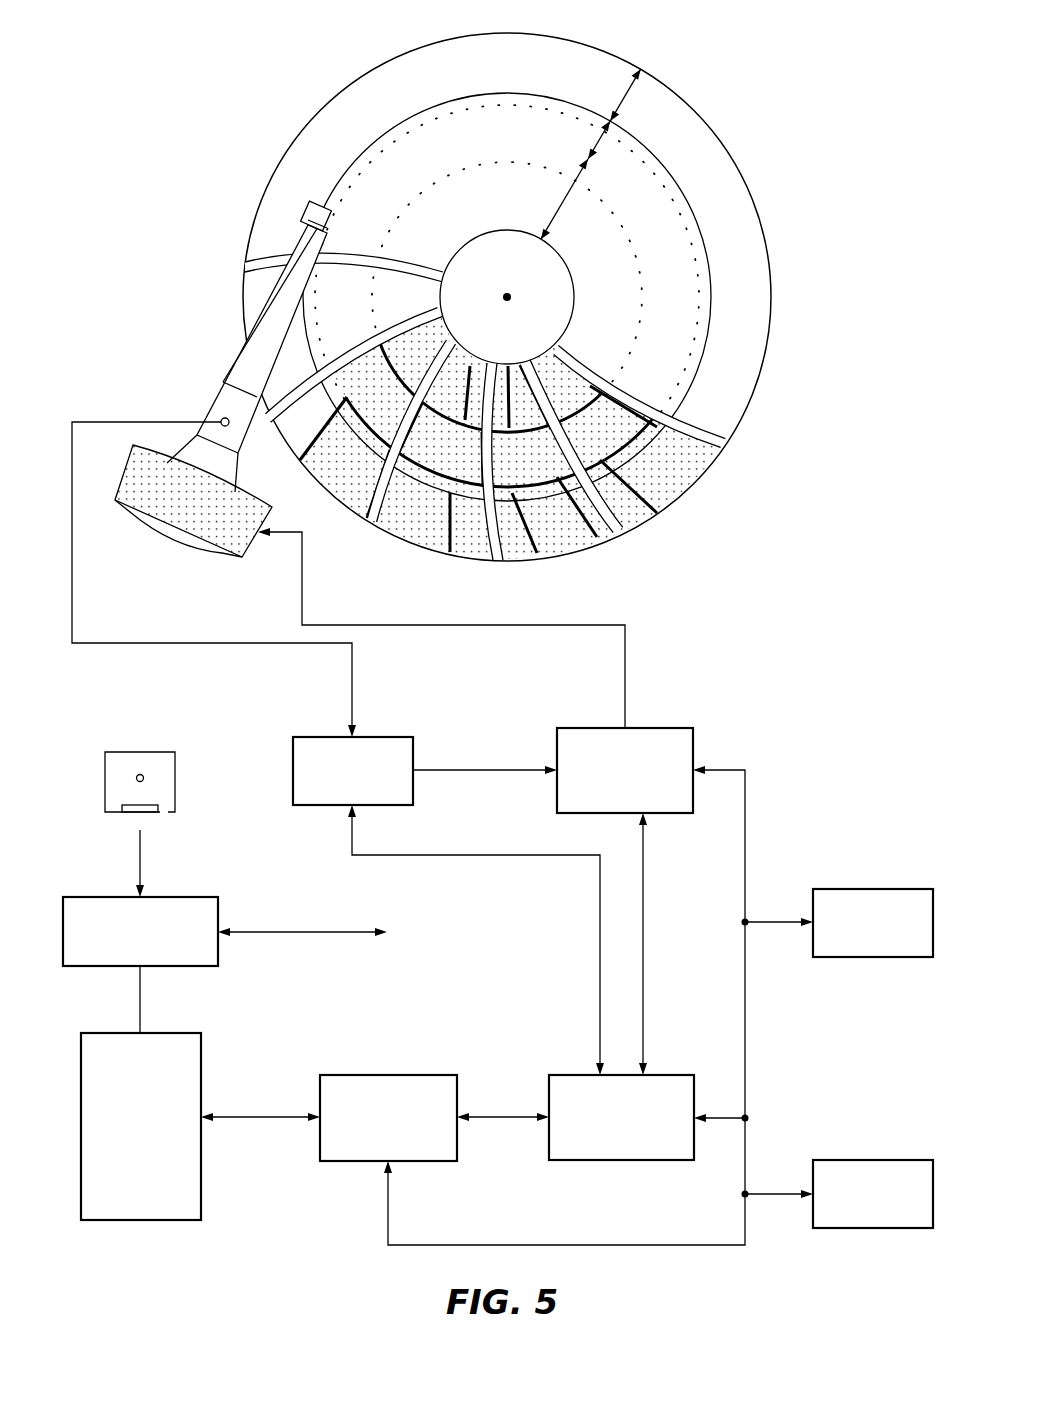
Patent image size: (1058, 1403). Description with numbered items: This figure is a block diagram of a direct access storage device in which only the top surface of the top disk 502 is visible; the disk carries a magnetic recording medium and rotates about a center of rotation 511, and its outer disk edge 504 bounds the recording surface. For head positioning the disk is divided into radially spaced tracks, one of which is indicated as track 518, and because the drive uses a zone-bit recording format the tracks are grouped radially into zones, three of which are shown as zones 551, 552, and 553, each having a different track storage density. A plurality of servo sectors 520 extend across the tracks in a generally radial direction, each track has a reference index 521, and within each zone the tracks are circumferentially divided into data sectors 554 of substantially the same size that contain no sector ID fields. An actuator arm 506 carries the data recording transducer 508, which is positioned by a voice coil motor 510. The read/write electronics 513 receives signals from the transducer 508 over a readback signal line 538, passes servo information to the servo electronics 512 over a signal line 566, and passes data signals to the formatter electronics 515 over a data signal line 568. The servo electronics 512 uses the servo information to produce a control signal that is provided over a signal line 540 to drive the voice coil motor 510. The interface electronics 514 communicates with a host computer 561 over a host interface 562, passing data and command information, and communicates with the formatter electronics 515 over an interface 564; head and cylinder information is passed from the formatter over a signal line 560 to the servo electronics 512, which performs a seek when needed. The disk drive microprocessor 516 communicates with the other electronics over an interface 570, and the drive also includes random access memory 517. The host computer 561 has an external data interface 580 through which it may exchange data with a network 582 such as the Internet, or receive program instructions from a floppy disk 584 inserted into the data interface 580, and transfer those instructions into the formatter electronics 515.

The top disk 502 is at (205, 77).
The disk 504 is at (308, 123).
The actuator arm 506 is at (238, 356).
The data recording transducer 508 is at (306, 210).
The voice coil motor 510 is at (251, 500).
The center of rotation 511 is at (510, 299).
The servo electronics 512 is at (674, 727).
The read/write electronics 513 is at (394, 736).
The interface electronics 514 is at (428, 1075).
The formatter electronics 515 is at (668, 1161).
The disk drive microprocessor 516 is at (840, 958).
The disk drive random access memory 517 is at (840, 1229).
The track 518 is at (394, 121).
The servo sector 520 is at (620, 533).
The reference index 521 is at (724, 450).
The readback signal line 538 is at (113, 420).
The signal line 540 is at (302, 577).
The zone 551 is at (624, 97).
The zone 552 is at (582, 152).
The zone 553 is at (552, 207).
The data sector 554 is at (675, 492).
The signal line 560 is at (644, 941).
The host computer 561 is at (185, 1221).
The host interface 562 is at (270, 1120).
The interface 564 is at (508, 1120).
The signal line 566 is at (468, 769).
The data signal line 568 is at (599, 941).
The interface 570 is at (746, 810).
The external data interface 580 is at (198, 897).
The network 582 is at (293, 930).
The floppy disk 584 is at (156, 752).